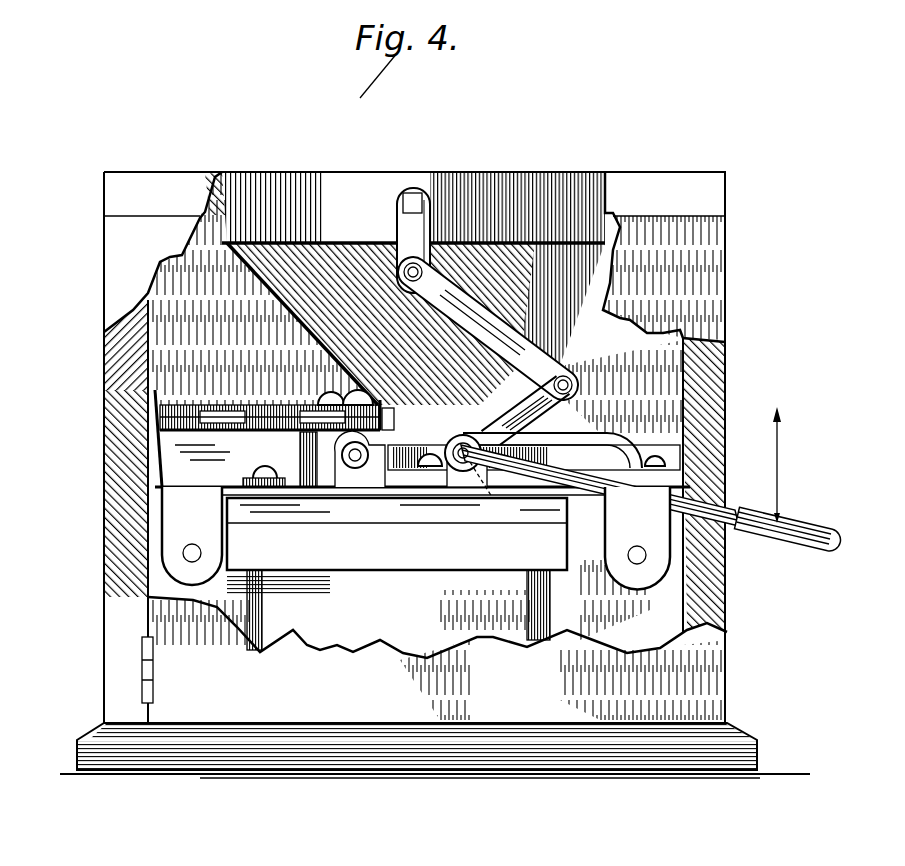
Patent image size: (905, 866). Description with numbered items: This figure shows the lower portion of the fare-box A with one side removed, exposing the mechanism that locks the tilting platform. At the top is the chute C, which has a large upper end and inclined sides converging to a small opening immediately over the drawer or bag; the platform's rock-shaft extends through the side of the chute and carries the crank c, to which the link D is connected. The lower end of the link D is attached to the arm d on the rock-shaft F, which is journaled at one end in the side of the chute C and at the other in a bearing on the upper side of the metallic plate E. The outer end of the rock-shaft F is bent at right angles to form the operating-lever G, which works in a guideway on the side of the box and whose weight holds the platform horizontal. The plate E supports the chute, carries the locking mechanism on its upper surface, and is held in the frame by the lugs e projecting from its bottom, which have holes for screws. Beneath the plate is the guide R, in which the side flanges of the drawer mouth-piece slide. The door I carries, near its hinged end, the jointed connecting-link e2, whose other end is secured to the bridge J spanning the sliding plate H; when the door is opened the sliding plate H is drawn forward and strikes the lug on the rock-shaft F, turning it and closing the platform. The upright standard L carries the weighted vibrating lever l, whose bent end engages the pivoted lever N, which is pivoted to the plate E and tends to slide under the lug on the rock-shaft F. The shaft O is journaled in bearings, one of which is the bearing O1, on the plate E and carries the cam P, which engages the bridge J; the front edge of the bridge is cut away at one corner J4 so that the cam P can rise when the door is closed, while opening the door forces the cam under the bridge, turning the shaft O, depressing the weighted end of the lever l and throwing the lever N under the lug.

The fare-box A is at (435, 475).
The door I is at (104, 503).
The chute C is at (413, 288).
The crank c is at (413, 240).
The link D is at (488, 328).
The arm d is at (526, 412).
The metallic plate E is at (158, 484).
The jointed connecting-link e2 is at (286, 406).
The vibrating arm or lever l is at (321, 391).
The cut-away corner J4 is at (342, 435).
The cam P is at (368, 425).
The upright standard L is at (300, 453).
The pivoted lever N is at (261, 469).
The shaft O is at (355, 455).
The bearing O1 is at (360, 459).
The sliding plate H is at (534, 467).
The bridge J is at (552, 439).
The rock-shaft F is at (463, 440).
The operating-lever G is at (649, 479).
The guide R is at (397, 534).
The lug e is at (416, 538).